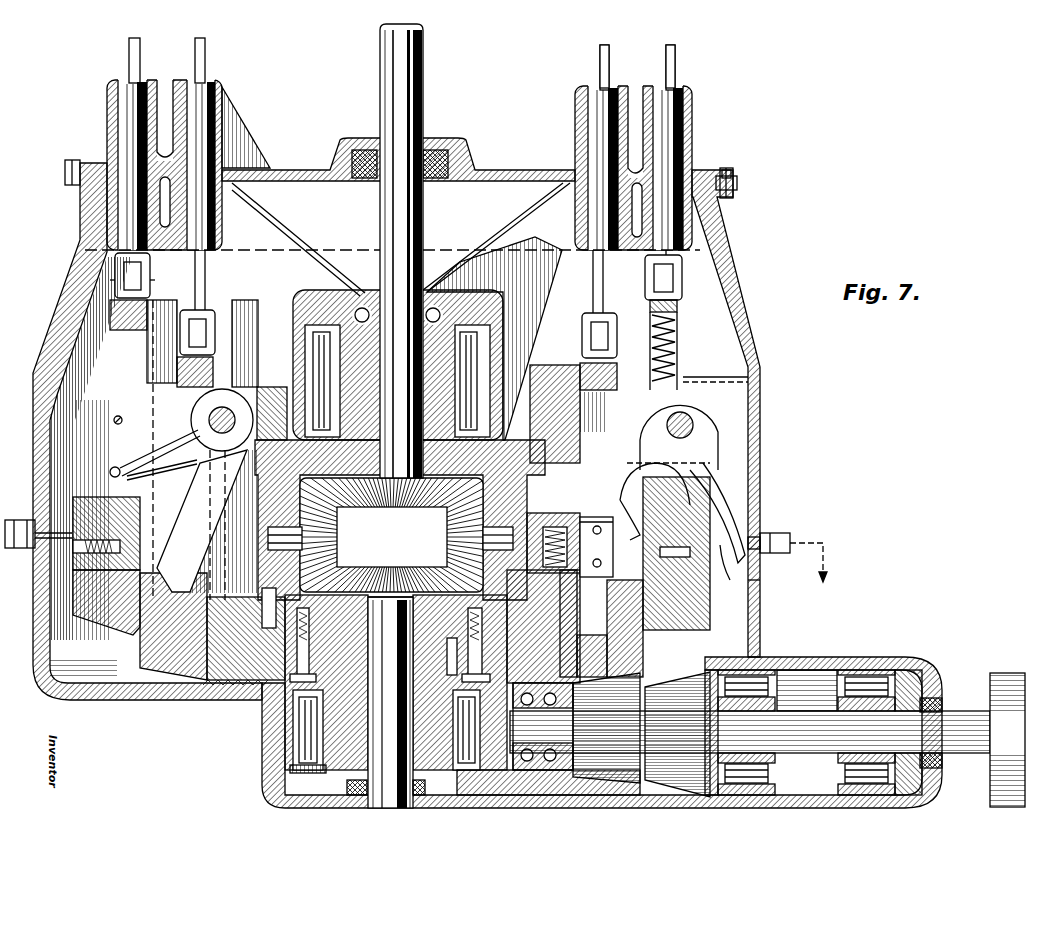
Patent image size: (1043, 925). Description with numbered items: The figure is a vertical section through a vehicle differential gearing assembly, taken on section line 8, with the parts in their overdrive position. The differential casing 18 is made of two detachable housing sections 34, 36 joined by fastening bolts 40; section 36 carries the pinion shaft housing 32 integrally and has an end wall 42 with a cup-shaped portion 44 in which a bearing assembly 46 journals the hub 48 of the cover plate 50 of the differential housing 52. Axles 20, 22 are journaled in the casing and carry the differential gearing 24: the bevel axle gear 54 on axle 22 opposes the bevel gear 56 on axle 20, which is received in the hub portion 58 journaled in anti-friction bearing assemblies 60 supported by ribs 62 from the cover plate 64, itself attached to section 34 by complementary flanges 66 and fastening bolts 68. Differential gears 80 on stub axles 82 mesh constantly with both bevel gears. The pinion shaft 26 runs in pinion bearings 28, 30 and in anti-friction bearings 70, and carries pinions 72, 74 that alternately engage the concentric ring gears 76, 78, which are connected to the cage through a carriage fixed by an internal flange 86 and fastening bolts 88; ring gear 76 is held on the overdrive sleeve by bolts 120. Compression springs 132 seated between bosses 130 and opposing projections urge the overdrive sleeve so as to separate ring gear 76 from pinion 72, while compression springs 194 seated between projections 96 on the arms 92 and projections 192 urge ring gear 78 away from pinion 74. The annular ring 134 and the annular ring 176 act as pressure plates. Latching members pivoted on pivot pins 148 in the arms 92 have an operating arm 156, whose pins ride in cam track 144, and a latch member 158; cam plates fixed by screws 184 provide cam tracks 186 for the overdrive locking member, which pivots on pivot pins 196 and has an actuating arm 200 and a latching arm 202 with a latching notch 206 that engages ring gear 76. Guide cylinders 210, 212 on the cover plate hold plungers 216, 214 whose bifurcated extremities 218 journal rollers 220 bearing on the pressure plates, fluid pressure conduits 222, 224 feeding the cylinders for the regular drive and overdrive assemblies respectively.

The section line 8 is at (808, 562).
The differential casing 18 is at (762, 412).
The axle 20 is at (424, 95).
The axle 22 is at (386, 702).
The differential gearing 24 is at (352, 510).
The pinion shaft 26 is at (957, 722).
The pinion bearing 28 is at (776, 705).
The pinion bearing 30 is at (877, 682).
The pinion shaft housing 32 is at (800, 672).
The housing section 34 is at (757, 510).
The housing section 36 is at (760, 600).
The fastening bolts 40 is at (72, 531).
The end wall 42 is at (195, 700).
The cup-shaped portion 44 is at (265, 760).
The bearing assembly 46 is at (318, 738).
The hub 48 is at (458, 682).
The cover plate 50 is at (326, 682).
The differential housing 52 is at (527, 505).
The bevel axle gear 54 is at (390, 611).
The bevel gear 56 is at (392, 537).
The hub portion 58 is at (398, 365).
The anti-friction bearing assemblies 60 is at (318, 350).
The ribs 62 is at (392, 311).
The cover plate 64 is at (300, 172).
The complementary flanges 66 is at (738, 181).
The fastening bolts 68 is at (734, 162).
The anti-friction bearings 70 is at (525, 770).
The pinion 72 is at (640, 683).
The pinion 74 is at (688, 683).
The ring gear 76 is at (173, 626).
The ring gear 78 is at (106, 602).
The differential gears 80 is at (483, 538).
The stub axles 82 is at (543, 522).
The internal flange 86 is at (312, 640).
The fastening bolts 88 is at (298, 657).
The arms 92 is at (667, 435).
The projections 96 is at (670, 392).
The bolts 120 is at (607, 598).
The bosses 130 is at (570, 522).
The compression springs 132 is at (543, 598).
The annular ring 134 is at (214, 362).
The cam track 144 is at (637, 540).
The pivot pins 148 is at (684, 438).
The operating arm 156 is at (625, 495).
The latch member 158 is at (725, 490).
The annular ring 176 is at (678, 305).
The screws 184 is at (114, 419).
The cam tracks 186 is at (122, 438).
The projections 192 is at (686, 348).
The compression springs 194 is at (678, 350).
The pivot pins 196 is at (212, 430).
The actuating arm 200 is at (162, 474).
The latching arm 202 is at (227, 484).
The latching notch 206 is at (727, 566).
The guide cylinders 210 is at (226, 112).
The guide cylinders 212 is at (108, 126).
The plunger 214 is at (683, 136).
The plunger 216 is at (600, 90).
The bifurcated extremities 218 is at (683, 272).
The rollers 220 is at (590, 322).
The fluid pressure conduits 222 is at (676, 65).
The fluid pressure conduits 224 is at (600, 65).